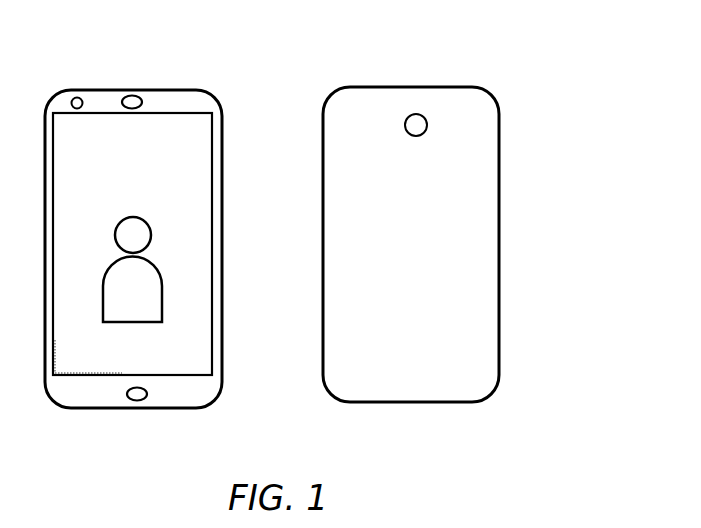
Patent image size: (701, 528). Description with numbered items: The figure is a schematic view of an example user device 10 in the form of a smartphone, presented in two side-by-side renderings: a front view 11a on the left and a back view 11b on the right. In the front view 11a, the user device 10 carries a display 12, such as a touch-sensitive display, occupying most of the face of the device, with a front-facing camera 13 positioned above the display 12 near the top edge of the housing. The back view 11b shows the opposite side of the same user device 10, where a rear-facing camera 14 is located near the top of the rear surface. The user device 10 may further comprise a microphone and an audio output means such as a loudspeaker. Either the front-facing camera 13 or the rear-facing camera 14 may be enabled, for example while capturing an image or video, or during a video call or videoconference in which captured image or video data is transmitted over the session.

The user device 10 is at (542, 332).
The front view 11a is at (215, 100).
The back view 11b is at (493, 93).
The display 12 is at (70, 366).
The front-facing camera 13 is at (79, 100).
The rear-facing camera 14 is at (420, 113).